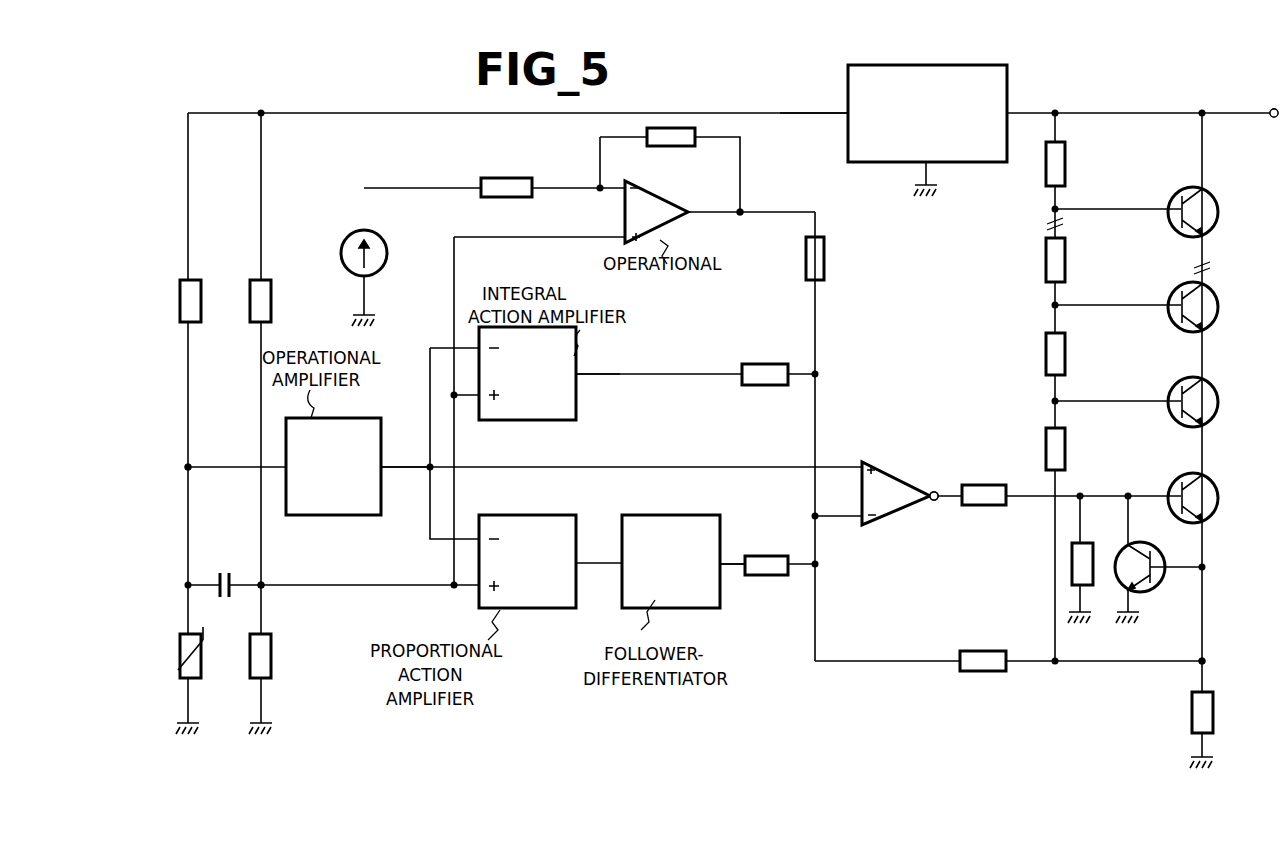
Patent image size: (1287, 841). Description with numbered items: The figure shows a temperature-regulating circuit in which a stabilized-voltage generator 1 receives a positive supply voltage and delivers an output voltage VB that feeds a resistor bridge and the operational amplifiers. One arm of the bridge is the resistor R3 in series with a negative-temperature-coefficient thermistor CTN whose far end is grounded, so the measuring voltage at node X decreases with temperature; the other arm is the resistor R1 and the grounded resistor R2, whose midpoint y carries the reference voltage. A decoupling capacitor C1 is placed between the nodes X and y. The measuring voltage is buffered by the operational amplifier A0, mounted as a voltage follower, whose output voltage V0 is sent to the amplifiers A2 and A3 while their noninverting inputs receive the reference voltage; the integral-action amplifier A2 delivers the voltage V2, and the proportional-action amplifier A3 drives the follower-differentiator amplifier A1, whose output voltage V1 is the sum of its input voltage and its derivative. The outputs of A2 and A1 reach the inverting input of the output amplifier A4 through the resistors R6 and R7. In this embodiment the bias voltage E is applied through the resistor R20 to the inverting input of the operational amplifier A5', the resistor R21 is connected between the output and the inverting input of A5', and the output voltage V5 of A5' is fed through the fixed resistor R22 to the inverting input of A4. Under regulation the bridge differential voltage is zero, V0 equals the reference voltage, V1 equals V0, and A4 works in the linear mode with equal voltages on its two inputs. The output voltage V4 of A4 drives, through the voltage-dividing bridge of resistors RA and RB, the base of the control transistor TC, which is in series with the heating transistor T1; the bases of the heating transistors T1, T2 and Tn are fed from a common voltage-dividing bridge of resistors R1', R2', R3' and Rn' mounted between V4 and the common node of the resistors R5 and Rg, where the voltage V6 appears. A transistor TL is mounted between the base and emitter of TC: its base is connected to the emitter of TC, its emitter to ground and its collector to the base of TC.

The stabilized-voltage generator 1 is at (1008, 98).
The resistor R3 is at (203, 287).
The resistor R1 is at (276, 287).
The resistor R2 is at (279, 656).
The bias voltage E is at (389, 254).
The resistor R20 is at (492, 177).
The resistor R21 is at (655, 146).
The operational amplifier A5' is at (656, 212).
The voltage node V5 is at (744, 210).
The fixed resistor R22 is at (826, 268).
The output voltage VB is at (814, 98).
The resistor Rn' is at (1078, 164).
The resistor R3' is at (1078, 260).
The resistor R2' is at (1078, 354).
The resistor R1' is at (1078, 449).
The heating transistor Tn is at (1218, 220).
The heating transistor T2 is at (1218, 320).
The heating transistor T1 is at (1218, 415).
The control transistor TC is at (1218, 508).
The resistor RB is at (1085, 542).
The transistor TL is at (1160, 585).
The voltage node V6 is at (1207, 658).
The resistor Rg is at (1190, 712).
The resistor RA is at (984, 506).
The resistor R5 is at (972, 650).
The output operational amplifier A4 is at (900, 493).
The supply voltage V4 is at (936, 490).
The resistor R7 is at (762, 555).
The resistor R6 is at (760, 363).
The operational amplifier A1 is at (671, 561).
The output voltage V1 is at (726, 567).
The proportional-action amplifier A3 is at (527, 561).
The operational amplifier A2 is at (527, 373).
The voltage node V2 is at (590, 370).
The operational amplifier A0 is at (333, 466).
The output voltage V0 is at (386, 462).
The node X is at (192, 462).
The node y is at (265, 580).
The decoupling capacitor C1 is at (212, 572).
The thermistor CTN is at (202, 664).